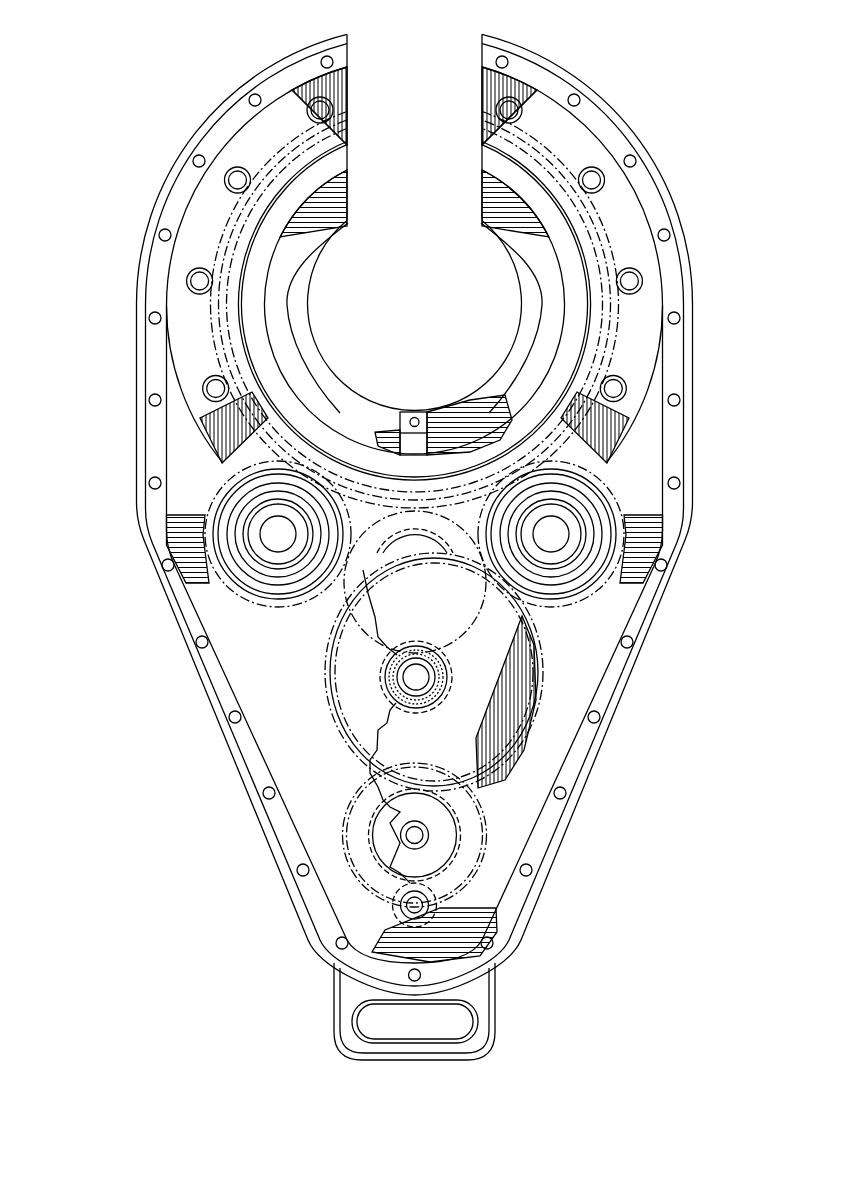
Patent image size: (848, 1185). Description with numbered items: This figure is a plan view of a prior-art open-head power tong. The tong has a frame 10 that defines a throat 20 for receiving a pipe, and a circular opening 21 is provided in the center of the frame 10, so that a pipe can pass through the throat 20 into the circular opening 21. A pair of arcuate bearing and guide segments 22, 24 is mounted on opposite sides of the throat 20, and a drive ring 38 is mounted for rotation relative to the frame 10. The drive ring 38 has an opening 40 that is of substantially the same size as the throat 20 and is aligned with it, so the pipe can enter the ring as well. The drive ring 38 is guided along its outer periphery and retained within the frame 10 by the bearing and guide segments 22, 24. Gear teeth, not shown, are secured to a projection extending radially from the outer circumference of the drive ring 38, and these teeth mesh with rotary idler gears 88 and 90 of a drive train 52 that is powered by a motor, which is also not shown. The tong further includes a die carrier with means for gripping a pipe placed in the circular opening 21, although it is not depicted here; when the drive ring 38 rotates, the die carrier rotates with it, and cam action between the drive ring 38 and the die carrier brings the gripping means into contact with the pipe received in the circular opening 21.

The frame 10 is at (157, 78).
The throat 20 is at (472, 82).
The circular opening 21 is at (428, 320).
The arcuate bearing and guide segment 22 is at (192, 224).
The arcuate bearing and guide segment 24 is at (634, 224).
The drive ring 38 is at (330, 220).
The opening 40 is at (348, 104).
The drive train 52 is at (574, 685).
The rotary idler gear 88 is at (556, 592).
The rotary idler gear 90 is at (277, 592).